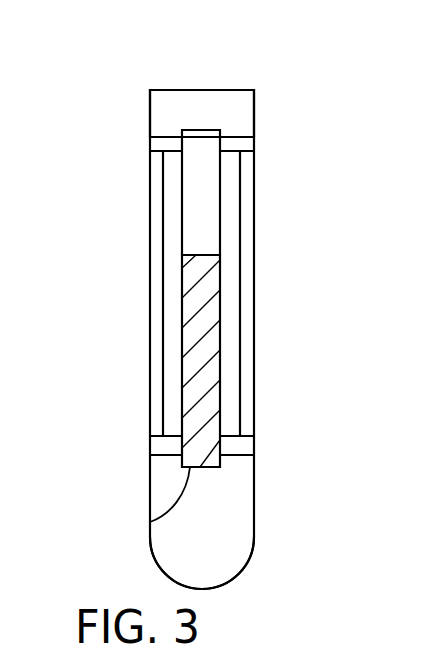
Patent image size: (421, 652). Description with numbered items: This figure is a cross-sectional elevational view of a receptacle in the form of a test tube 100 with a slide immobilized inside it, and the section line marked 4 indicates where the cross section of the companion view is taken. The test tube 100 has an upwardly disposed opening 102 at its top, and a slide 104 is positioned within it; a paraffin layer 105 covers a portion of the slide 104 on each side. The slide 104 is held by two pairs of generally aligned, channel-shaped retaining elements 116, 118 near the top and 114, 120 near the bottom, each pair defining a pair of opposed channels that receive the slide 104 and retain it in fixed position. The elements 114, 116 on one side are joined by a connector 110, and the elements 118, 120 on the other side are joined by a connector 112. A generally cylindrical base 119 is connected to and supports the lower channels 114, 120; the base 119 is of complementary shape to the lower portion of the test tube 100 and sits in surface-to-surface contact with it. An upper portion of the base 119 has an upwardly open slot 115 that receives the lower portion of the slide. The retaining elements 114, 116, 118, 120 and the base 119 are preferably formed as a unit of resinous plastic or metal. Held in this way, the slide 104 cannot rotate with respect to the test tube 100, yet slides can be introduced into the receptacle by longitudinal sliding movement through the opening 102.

The test tube 100 is at (148, 330).
The upwardly disposed opening 102 is at (230, 90).
The slide 104 is at (205, 141).
The paraffin layer 105 is at (202, 445).
The connector 110 is at (162, 273).
The connector 112 is at (238, 272).
The channel-shaped retaining element 114 is at (167, 448).
The upwardly open slot 115 is at (150, 522).
The channel-shaped retaining element 116 is at (170, 142).
The channel-shaped retaining element 118 is at (237, 142).
The generally cylindrical base 119 is at (212, 545).
The channel-shaped retaining element 120 is at (240, 446).
The section line 4- 4 is at (303, 163).